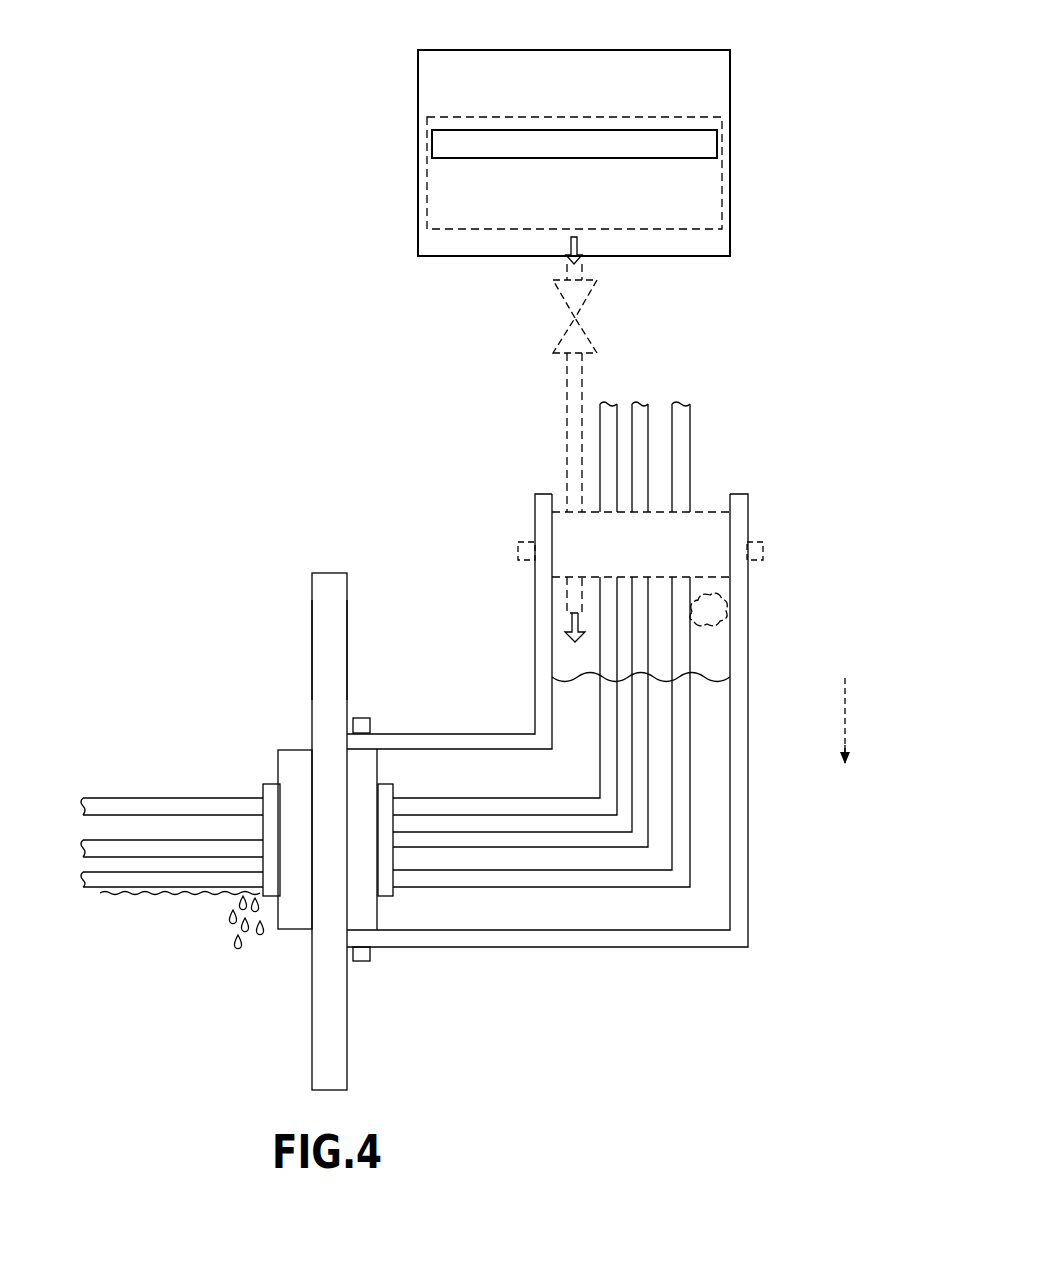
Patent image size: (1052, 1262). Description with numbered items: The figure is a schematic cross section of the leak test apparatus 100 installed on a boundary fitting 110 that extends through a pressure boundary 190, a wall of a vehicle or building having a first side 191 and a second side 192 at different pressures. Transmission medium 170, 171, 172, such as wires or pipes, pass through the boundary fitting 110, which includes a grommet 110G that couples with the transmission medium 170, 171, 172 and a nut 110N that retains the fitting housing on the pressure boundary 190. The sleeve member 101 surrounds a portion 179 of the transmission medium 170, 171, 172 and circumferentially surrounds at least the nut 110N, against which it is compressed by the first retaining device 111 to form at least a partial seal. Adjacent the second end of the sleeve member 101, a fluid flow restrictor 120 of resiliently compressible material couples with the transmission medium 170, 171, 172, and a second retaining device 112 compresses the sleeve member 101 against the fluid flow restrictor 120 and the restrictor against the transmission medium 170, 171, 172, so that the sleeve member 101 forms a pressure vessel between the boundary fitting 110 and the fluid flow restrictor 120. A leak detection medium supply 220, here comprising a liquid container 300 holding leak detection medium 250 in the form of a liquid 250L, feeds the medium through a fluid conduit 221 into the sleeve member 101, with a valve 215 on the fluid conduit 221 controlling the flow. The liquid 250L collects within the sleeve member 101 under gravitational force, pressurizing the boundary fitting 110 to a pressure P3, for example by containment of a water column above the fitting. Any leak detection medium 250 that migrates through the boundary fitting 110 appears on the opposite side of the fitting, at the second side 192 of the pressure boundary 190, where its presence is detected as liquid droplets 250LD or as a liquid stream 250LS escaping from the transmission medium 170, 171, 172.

The leak test apparatus 100 is at (293, 193).
The sleeve member 101 is at (702, 947).
The boundary fitting 110 is at (283, 855).
The grommet 110G is at (265, 787).
The nut 110N is at (297, 750).
The first retaining device 111 is at (362, 718).
The second retaining device 112 is at (763, 558).
The fluid flow restrictor 120 is at (722, 525).
The transmission medium 170 is at (618, 415).
The transmission medium 171 is at (650, 420).
The transmission medium 172 is at (690, 425).
The portion of the transmission medium 179 is at (575, 897).
The pressure boundary 190 is at (327, 572).
The first side 191 is at (347, 598).
The second side 192 is at (311, 598).
The valve 215 is at (585, 300).
The leak detection medium supply 220 is at (673, 50).
The fluid conduit 221 is at (566, 383).
The leak detection medium 250 is at (700, 158).
The liquid 250L is at (572, 632).
The liquid stream 250LS is at (118, 892).
The liquid droplets 250LD is at (220, 940).
The liquid container 300 is at (690, 232).
The pressure P3 is at (709, 610).